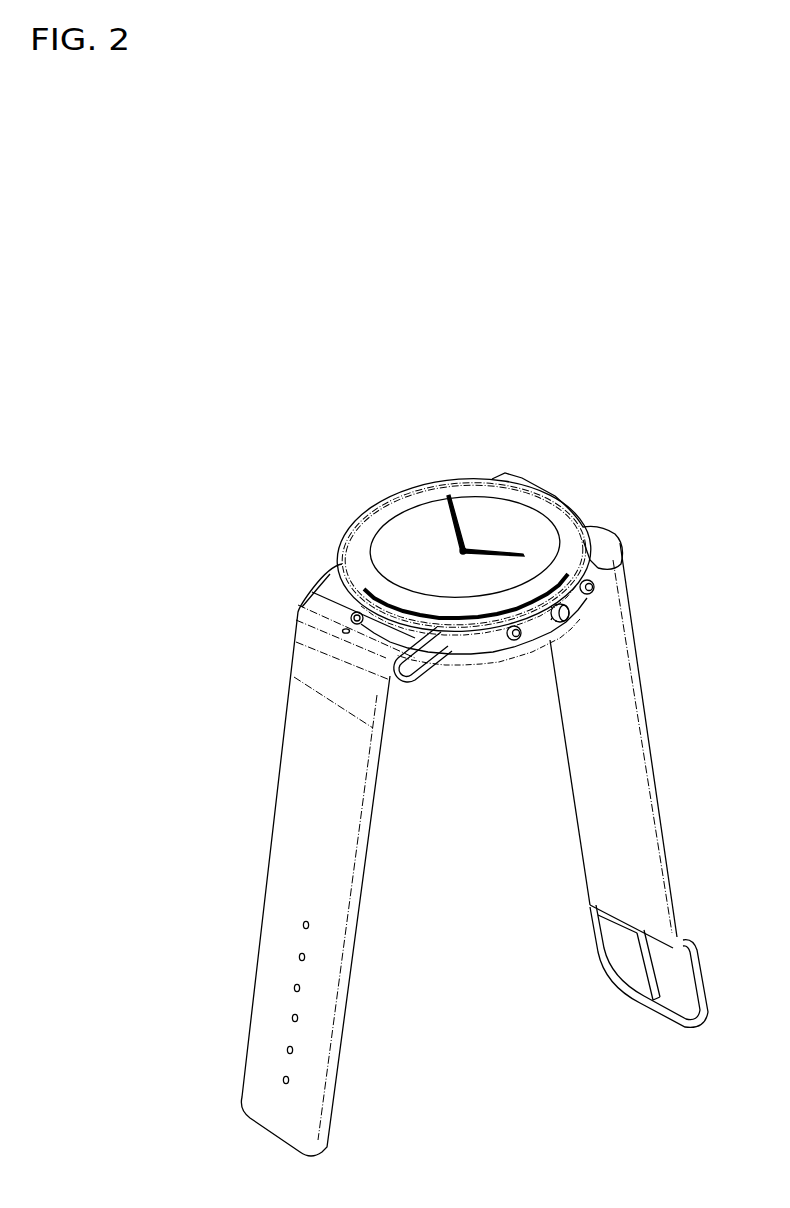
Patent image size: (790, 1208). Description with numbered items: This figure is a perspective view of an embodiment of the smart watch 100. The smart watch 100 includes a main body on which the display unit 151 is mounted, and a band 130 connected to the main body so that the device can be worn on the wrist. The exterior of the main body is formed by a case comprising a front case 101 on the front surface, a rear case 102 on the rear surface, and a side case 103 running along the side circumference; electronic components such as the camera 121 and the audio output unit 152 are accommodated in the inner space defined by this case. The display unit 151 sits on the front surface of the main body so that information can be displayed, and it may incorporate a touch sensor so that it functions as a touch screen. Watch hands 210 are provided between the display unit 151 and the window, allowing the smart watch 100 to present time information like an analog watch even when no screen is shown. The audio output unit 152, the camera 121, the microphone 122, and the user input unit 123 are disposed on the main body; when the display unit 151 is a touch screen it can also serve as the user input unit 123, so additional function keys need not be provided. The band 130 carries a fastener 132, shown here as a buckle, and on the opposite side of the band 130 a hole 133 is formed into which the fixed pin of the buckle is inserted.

The smart watch 100 is at (654, 395).
The front case 101 is at (382, 508).
The rear case 102 is at (493, 652).
The side case 103 is at (443, 657).
The camera 121 is at (350, 614).
The microphone 122 is at (342, 631).
The user input unit 123 is at (571, 627).
The band 130 is at (293, 760).
The fastener 132 is at (600, 937).
The hole 133 is at (283, 1078).
The display unit 151 is at (470, 510).
The audio output unit 152 is at (548, 497).
The watch hands 210 is at (438, 515).